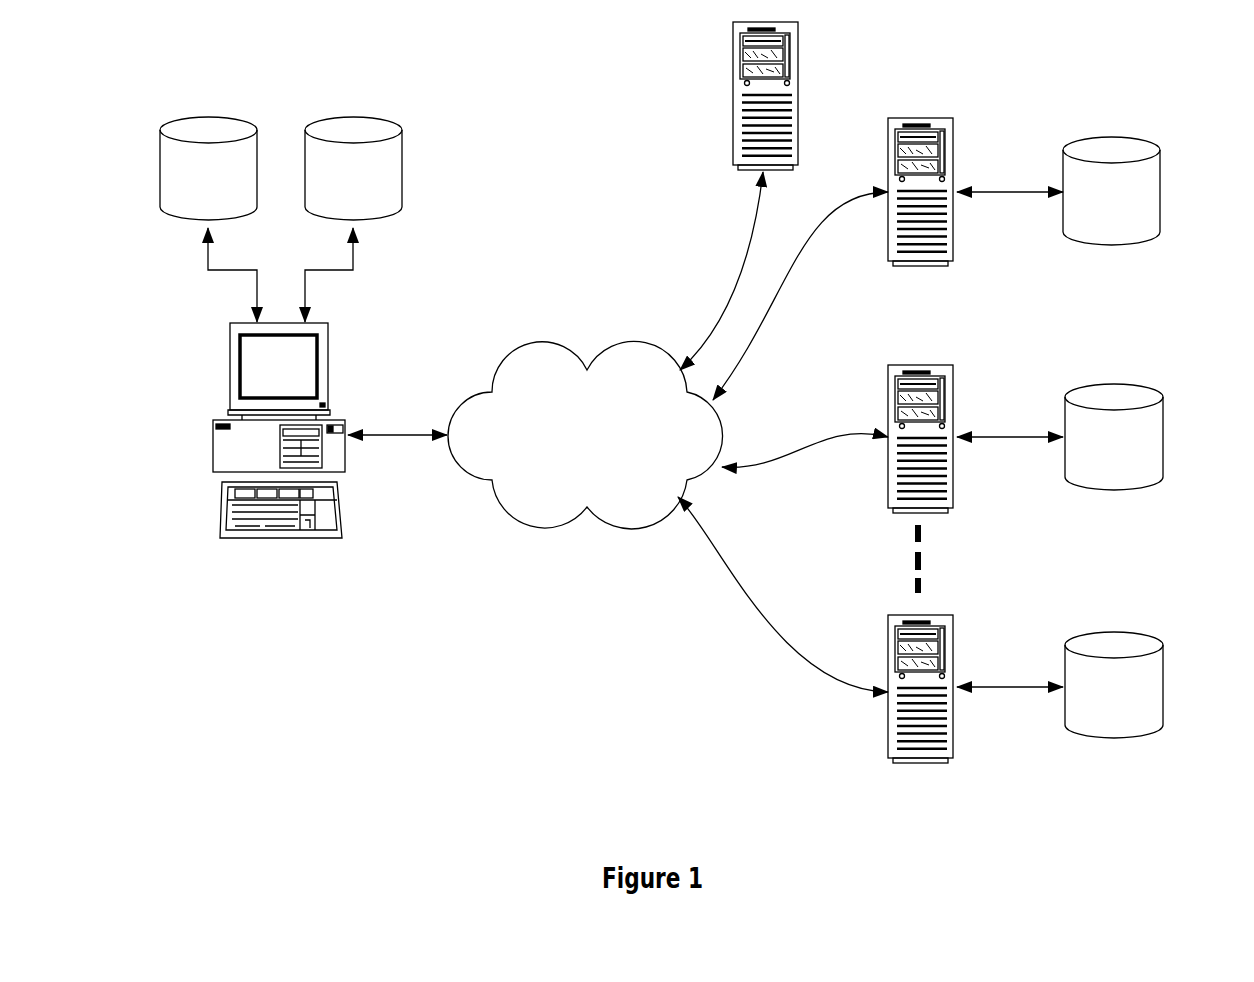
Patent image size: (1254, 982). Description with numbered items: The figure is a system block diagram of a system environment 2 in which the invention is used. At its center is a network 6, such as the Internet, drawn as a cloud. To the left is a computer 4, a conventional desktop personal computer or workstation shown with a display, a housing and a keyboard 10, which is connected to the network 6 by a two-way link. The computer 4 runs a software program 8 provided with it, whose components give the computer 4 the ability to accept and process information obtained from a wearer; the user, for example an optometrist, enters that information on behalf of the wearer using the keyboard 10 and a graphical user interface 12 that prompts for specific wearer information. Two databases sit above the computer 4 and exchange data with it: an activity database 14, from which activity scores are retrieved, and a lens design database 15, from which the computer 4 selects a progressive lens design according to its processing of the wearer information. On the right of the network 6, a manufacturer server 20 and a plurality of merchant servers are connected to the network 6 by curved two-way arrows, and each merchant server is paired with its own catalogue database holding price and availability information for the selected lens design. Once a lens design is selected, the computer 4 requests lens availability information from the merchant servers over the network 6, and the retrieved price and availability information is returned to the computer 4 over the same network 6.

The system environment 2 is at (547, 652).
The computer 4 is at (212, 432).
The network 6 is at (548, 525).
The software program 8 is at (212, 460).
The keyboard 10 is at (222, 507).
The graphical user interface 12 is at (230, 357).
The activity database 14 is at (208, 117).
The lens design database 15 is at (352, 117).
The manufacturer server 20 is at (802, 117).